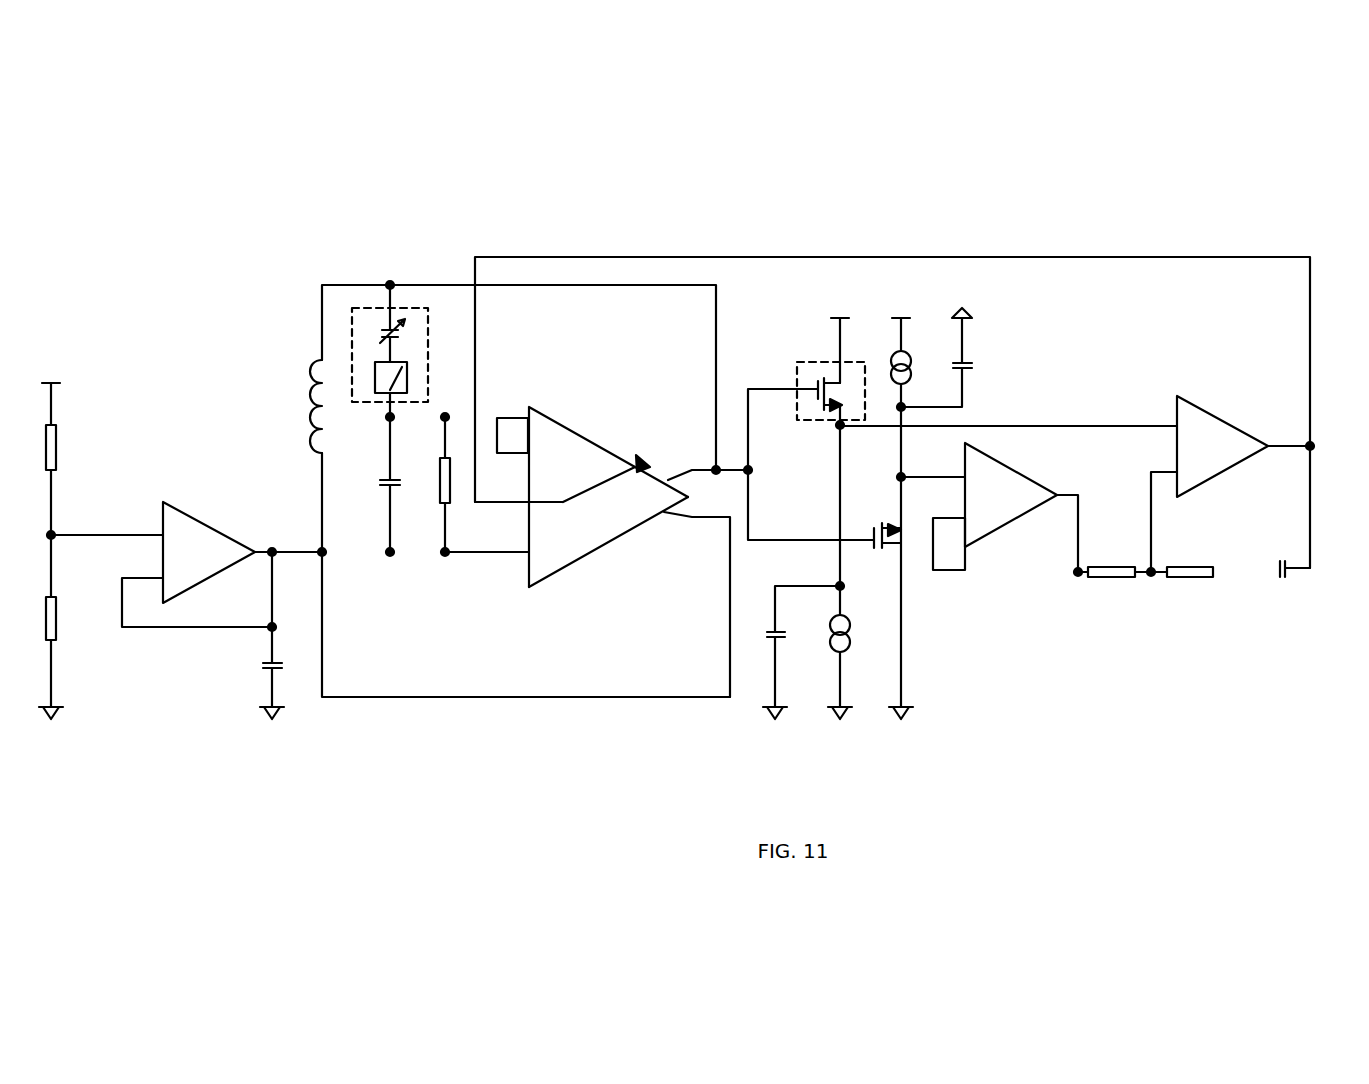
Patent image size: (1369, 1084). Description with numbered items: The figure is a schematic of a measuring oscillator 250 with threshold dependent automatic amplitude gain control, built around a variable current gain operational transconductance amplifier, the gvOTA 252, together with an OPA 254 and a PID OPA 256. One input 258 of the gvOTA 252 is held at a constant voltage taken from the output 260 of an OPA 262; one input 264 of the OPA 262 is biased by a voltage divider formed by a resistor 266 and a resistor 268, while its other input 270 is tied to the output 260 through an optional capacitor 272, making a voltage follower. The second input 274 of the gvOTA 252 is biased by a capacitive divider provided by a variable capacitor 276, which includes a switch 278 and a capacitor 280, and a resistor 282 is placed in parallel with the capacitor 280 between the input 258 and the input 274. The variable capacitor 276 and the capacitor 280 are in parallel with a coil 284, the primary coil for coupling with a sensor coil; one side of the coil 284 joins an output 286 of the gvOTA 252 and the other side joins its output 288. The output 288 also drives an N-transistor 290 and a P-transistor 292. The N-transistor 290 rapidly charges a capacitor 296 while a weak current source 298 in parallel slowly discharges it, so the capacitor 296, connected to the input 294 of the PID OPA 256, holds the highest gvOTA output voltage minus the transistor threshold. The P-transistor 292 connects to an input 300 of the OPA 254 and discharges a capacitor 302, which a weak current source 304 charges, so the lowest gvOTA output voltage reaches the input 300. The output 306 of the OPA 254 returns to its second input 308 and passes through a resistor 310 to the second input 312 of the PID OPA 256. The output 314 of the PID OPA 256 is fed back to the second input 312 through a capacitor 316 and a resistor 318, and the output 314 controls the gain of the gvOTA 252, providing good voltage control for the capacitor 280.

The measuring oscillator 250 is at (1122, 184).
The gvOTA 252 is at (588, 440).
The OPA 254 is at (1020, 470).
The PID OPA 256 is at (1198, 405).
The input 258 is at (526, 553).
The output 260 is at (265, 551).
The OPA 262 is at (199, 513).
The input 264 is at (160, 533).
The resistor 266 is at (56, 437).
The resistor 268 is at (57, 636).
The input 270 is at (163, 574).
The capacitor 272 is at (265, 664).
The second input 274 is at (523, 452).
The variable capacitor 276 is at (352, 320).
The switch 278 is at (375, 373).
The capacitor 280 is at (383, 483).
The resistor 282 is at (450, 503).
The coil 284 is at (314, 377).
The output 286 is at (664, 511).
The output 288 is at (667, 478).
The N-transistor 290 is at (815, 390).
The P-transistor 292 is at (883, 544).
The input 294 is at (1175, 426).
The capacitor 296 is at (775, 630).
The weak current source 298 is at (832, 650).
The input 300 is at (964, 476).
The capacitor 302 is at (968, 362).
The weak current source 304 is at (900, 350).
The output 306 is at (1057, 496).
The second input 308 is at (965, 518).
The resistor 310 is at (1110, 578).
The second input 312 is at (1175, 468).
The output 314 is at (1276, 440).
The capacitor 316 is at (1290, 578).
The resistor 318 is at (1190, 578).